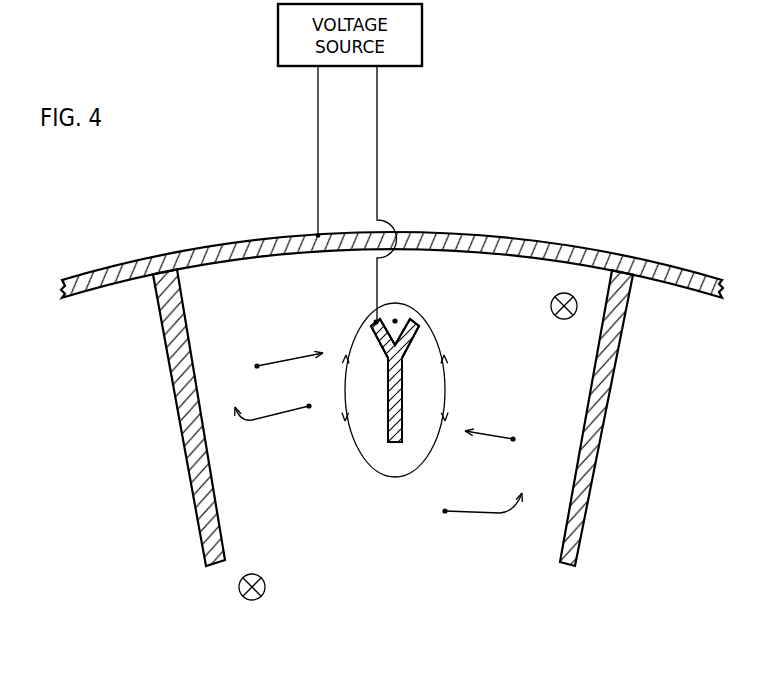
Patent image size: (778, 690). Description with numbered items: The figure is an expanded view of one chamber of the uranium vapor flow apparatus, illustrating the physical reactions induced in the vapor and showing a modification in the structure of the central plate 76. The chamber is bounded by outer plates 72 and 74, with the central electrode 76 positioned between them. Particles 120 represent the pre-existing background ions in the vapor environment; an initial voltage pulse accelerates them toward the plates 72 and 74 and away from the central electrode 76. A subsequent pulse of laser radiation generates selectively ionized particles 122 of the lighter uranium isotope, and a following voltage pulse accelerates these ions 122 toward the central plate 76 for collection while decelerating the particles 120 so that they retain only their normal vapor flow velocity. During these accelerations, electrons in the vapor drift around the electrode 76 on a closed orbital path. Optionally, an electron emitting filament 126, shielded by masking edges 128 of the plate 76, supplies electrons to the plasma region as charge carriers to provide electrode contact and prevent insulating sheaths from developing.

The plate 72 is at (202, 545).
The plate 74 is at (541, 242).
The central electrode plate 76 is at (401, 400).
The particles 120 is at (309, 406).
The selectively ionized particles 122 is at (257, 366).
The electron emitting filament 126 is at (397, 319).
The masking edges 128 is at (378, 339).